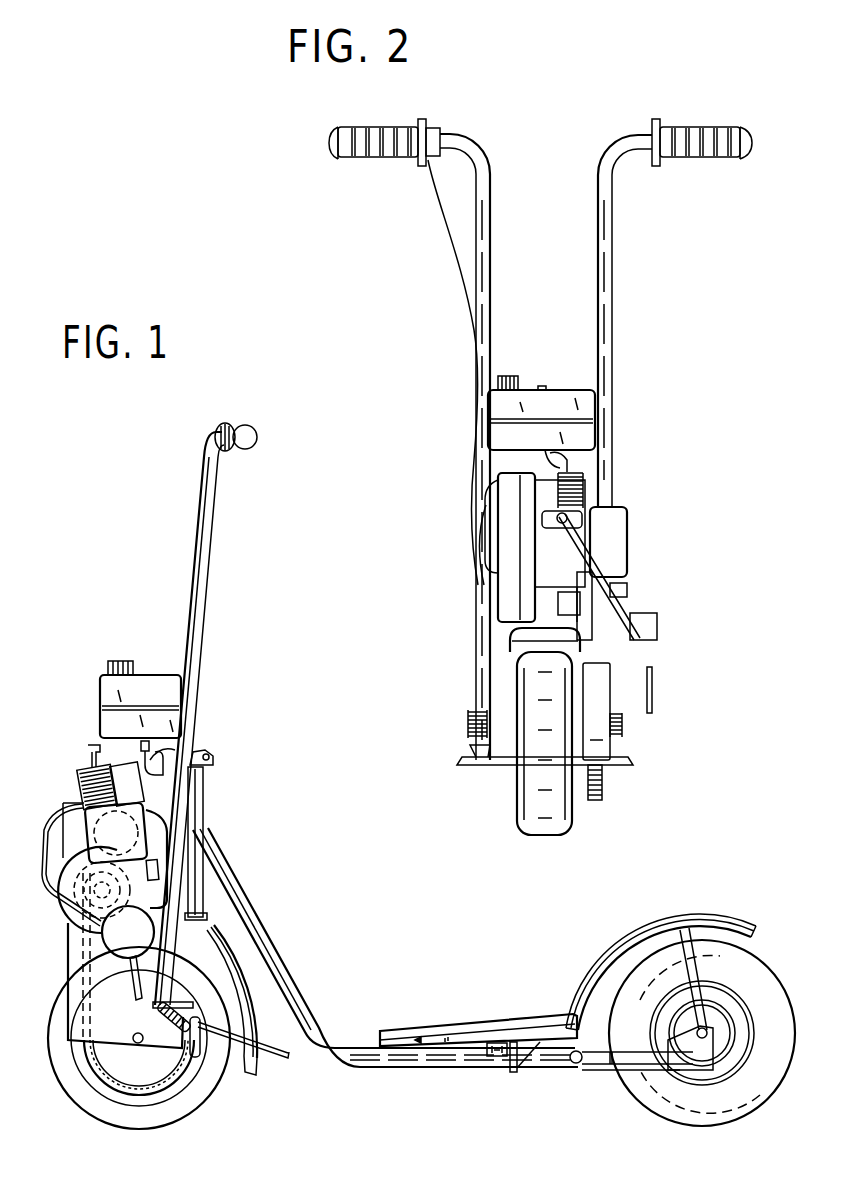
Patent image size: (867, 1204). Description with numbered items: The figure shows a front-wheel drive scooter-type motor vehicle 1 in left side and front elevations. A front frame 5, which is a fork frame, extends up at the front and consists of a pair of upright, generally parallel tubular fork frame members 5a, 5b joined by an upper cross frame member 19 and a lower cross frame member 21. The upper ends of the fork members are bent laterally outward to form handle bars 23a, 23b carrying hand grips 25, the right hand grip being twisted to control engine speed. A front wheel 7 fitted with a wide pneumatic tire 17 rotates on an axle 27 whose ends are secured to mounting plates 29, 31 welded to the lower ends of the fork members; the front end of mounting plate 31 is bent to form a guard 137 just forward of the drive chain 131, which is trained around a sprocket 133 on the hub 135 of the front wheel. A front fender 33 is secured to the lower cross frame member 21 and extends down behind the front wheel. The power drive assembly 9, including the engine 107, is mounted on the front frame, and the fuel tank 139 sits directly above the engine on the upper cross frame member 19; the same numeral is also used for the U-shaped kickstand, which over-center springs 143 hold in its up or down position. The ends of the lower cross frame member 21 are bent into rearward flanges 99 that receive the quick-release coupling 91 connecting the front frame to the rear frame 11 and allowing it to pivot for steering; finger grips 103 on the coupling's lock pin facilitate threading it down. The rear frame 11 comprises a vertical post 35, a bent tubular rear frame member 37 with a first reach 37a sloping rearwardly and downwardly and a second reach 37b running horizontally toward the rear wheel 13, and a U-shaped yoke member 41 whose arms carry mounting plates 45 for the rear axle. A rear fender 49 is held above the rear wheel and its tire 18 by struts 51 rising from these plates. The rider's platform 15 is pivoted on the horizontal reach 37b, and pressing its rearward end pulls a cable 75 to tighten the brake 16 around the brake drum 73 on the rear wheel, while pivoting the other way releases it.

In FIG. 2, the scooter-type motor vehicle 1 is at (692, 78).
In FIG. 1, the scooter-type motor vehicle 1 is at (128, 508).
In FIG. 1, the front frame 5 is at (211, 715).
In FIG. 2, the fork frame member 5a is at (612, 276).
In FIG. 1, the fork frame member 5a is at (213, 528).
In FIG. 2, the fork frame member 5b is at (489, 296).
In FIG. 1, the front wheel 7 is at (229, 757).
In FIG. 2, the power drive assembly 9 is at (535, 545).
In FIG. 1, the power drive assembly 9 is at (108, 830).
In FIG. 1, the rear frame 11 is at (385, 975).
In FIG. 1, the rear wheel 13 is at (712, 1019).
In FIG. 1, the rider's platform 15 is at (412, 1033).
In FIG. 1, the brake 16 is at (739, 1052).
In FIG. 2, the front tire 17 is at (550, 836).
In FIG. 1, the front tire 17 is at (63, 1097).
In FIG. 1, the rear tire 18 is at (753, 950).
In FIG. 2, the upper cross frame member 19 is at (585, 388).
In FIG. 1, the upper cross frame member 19 is at (156, 687).
In FIG. 2, the lower cross frame member 21 is at (593, 490).
In FIG. 2, the handle bar 23a is at (648, 96).
In FIG. 2, the handle bar 23b is at (466, 141).
In FIG. 2, the hand grip 25 is at (388, 126).
In FIG. 2, the axle 27 is at (503, 761).
In FIG. 2, the mounting plate 29 is at (497, 733).
In FIG. 1, the mounting plate 31 is at (98, 997).
In FIG. 2, the front fender 33 is at (513, 648).
In FIG. 1, the front fender 33 is at (250, 1073).
In FIG. 1, the post 35 is at (204, 803).
In FIG. 1, the rear frame member 37 is at (385, 975).
In FIG. 1, the first reach 37a is at (263, 930).
In FIG. 1, the second reach 37b is at (420, 1073).
In FIG. 1, the yoke member 41 is at (610, 1071).
In FIG. 1, the mounting plate 45 is at (702, 1068).
In FIG. 1, the rear fender 49 is at (638, 930).
In FIG. 1, the strut 51 is at (693, 950).
In FIG. 1, the brake drum 73 is at (723, 1052).
In FIG. 1, the cable 75 is at (583, 1077).
In FIG. 1, the quick-release coupling 91 is at (249, 757).
In FIG. 1, the flange 99 is at (211, 768).
In FIG. 1, the finger grips 103 is at (213, 755).
In FIG. 1, the engine 107 is at (85, 797).
In FIG. 2, the chain 131 is at (600, 780).
In FIG. 1, the chain 131 is at (112, 1087).
In FIG. 1, the sprocket 133 is at (147, 1072).
In FIG. 2, the hub 135 is at (582, 784).
In FIG. 2, the guard 137 is at (597, 748).
In FIG. 2, the fuel tank 139 is at (577, 405).
In FIG. 1, the fuel tank 139 is at (107, 693).
In FIG. 1, the over-center springs 143 is at (207, 1067).